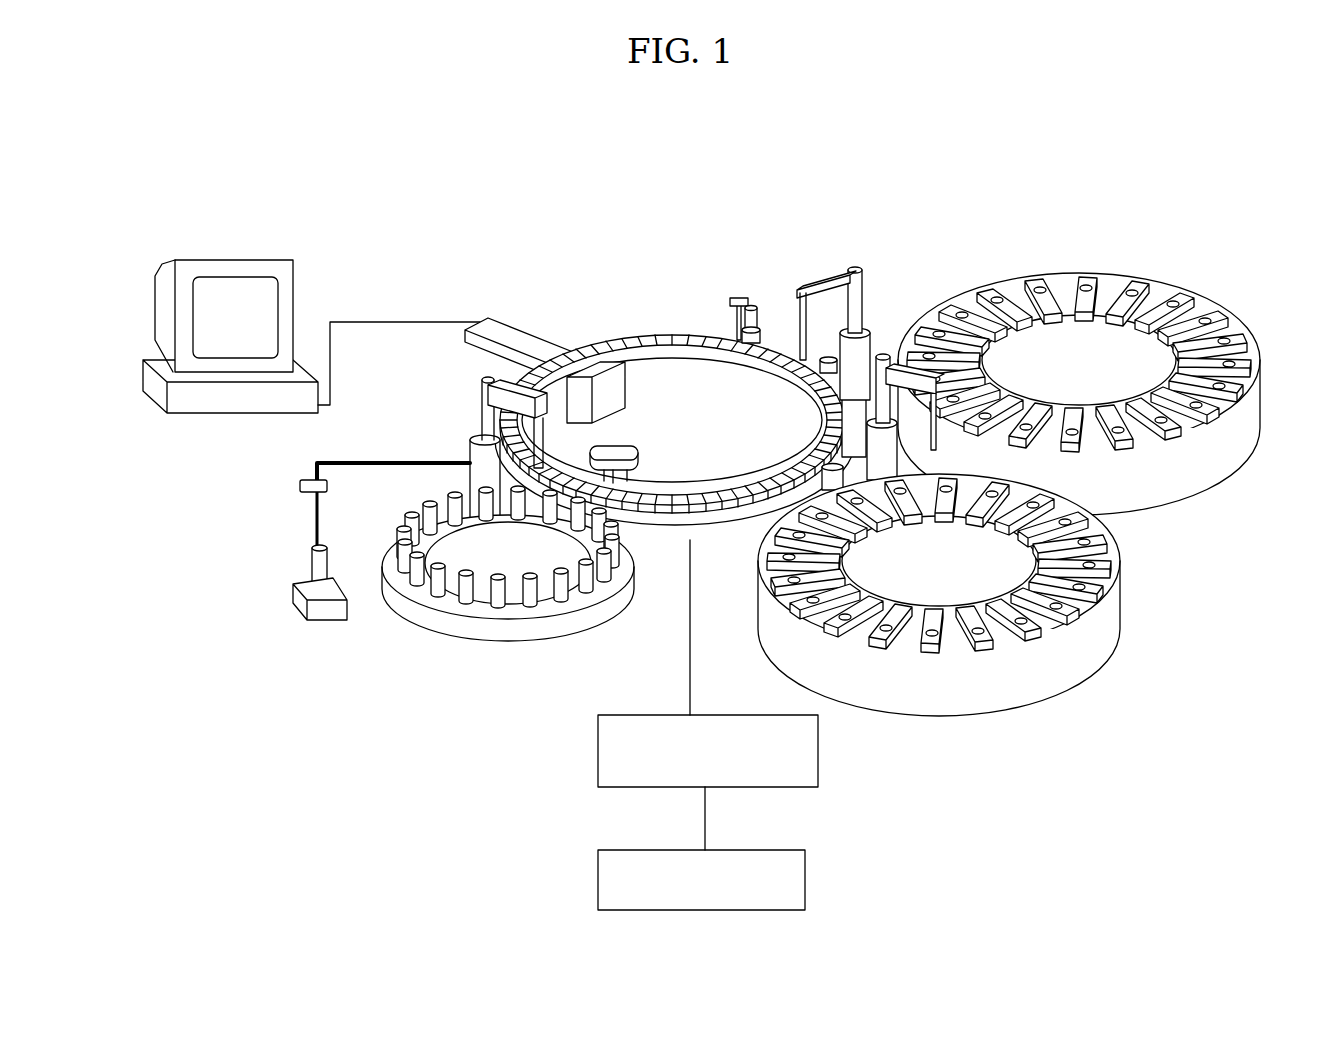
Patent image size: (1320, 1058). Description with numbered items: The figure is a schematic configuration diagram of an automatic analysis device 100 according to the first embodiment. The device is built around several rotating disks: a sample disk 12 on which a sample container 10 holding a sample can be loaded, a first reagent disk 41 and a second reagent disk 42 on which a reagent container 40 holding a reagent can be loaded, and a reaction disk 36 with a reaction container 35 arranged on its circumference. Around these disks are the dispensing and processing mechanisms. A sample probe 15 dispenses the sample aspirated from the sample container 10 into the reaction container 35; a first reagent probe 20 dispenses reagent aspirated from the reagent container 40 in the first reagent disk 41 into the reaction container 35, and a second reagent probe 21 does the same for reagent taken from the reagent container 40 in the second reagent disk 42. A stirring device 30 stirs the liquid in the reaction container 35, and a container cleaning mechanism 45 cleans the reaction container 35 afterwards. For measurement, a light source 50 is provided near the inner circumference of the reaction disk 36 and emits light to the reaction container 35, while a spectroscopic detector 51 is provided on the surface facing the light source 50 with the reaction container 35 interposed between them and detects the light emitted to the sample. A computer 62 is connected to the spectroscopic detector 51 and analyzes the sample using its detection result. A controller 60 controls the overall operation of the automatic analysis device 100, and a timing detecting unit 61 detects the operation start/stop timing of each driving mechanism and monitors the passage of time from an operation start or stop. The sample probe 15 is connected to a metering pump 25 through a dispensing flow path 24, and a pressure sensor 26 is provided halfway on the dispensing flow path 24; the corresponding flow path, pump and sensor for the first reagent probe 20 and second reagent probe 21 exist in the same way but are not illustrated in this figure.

The automatic analysis device 100 is at (993, 195).
The sample container 10 is at (568, 595).
The sample disk 12 is at (470, 625).
The sample probe 15 is at (480, 407).
The first reagent probe 20 is at (856, 268).
The second reagent probe 21 is at (880, 355).
The dispensing flow path 24 is at (330, 462).
The metering pump 25 is at (300, 598).
The pressure sensor 26 is at (300, 488).
The stirring device 30 is at (740, 300).
The reaction container 35 is at (655, 335).
The reaction disk 36 is at (690, 333).
The reagent container 40 is at (1037, 286).
The first reagent disk 41 is at (1228, 305).
The second reagent disk 42 is at (1115, 620).
The container cleaning mechanism 45 is at (632, 447).
The light source 50 is at (600, 368).
The spectroscopic detector 51 is at (515, 338).
The controller 60 is at (818, 772).
The timing detecting unit 61 is at (806, 880).
The computer 62 is at (232, 260).